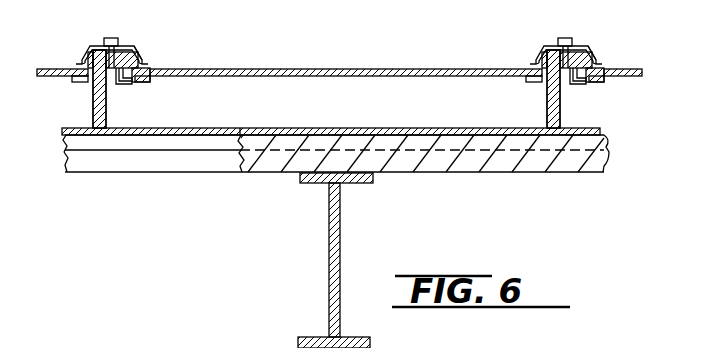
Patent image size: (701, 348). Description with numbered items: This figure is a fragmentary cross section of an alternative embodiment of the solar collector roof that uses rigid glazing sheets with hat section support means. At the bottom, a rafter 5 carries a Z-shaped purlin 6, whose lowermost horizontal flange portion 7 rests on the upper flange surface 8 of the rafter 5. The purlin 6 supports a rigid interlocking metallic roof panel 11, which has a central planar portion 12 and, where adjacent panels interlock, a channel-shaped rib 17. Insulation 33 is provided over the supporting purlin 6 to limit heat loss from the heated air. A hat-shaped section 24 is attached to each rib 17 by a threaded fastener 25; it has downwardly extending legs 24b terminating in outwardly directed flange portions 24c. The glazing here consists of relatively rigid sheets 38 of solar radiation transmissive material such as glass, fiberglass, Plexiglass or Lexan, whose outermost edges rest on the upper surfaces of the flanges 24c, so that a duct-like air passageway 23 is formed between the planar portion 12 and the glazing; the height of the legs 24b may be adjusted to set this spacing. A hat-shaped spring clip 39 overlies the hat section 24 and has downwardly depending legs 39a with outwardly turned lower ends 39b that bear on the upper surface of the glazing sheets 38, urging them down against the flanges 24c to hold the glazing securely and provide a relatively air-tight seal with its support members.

The rafter 5 is at (330, 267).
The Z-shaped purlin 6 is at (163, 167).
The lowermost horizontal flange portion 7 is at (90, 173).
The upper flange surface 8 is at (300, 178).
The roof panel 11 is at (173, 128).
The central planar portion 12 is at (263, 129).
The channel-shaped rib 17 is at (92, 103).
The air passageway 23 is at (375, 119).
The hat-shaped section 24 is at (82, 56).
The leg 24b is at (142, 61).
The outwardly directed flange portion 24c is at (137, 78).
The threaded fastener 25 is at (113, 45).
The insulation 33 is at (597, 160).
The rigid glazing sheet 38 is at (228, 69).
The hat-shaped spring clip 39 is at (107, 46).
The downwardly depending leg 39a is at (136, 52).
The outwardly turned lower end 39b is at (603, 69).